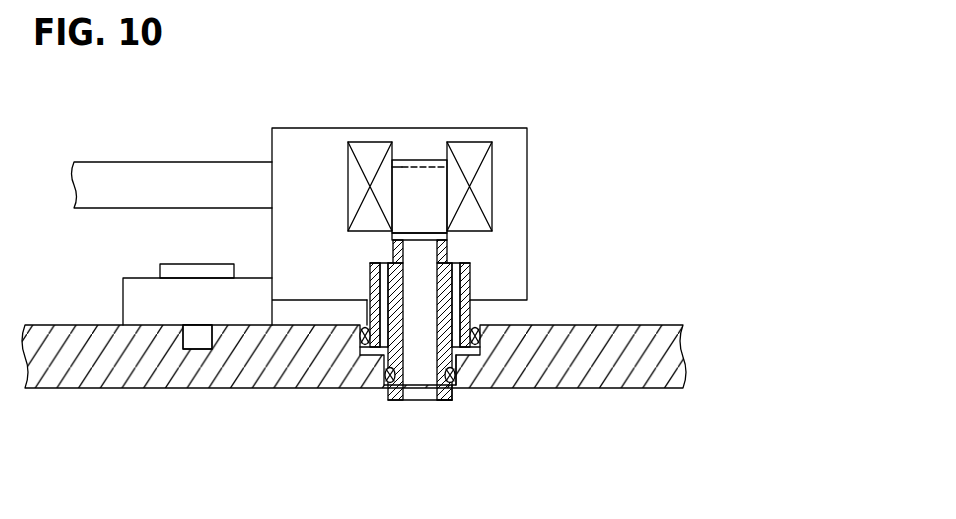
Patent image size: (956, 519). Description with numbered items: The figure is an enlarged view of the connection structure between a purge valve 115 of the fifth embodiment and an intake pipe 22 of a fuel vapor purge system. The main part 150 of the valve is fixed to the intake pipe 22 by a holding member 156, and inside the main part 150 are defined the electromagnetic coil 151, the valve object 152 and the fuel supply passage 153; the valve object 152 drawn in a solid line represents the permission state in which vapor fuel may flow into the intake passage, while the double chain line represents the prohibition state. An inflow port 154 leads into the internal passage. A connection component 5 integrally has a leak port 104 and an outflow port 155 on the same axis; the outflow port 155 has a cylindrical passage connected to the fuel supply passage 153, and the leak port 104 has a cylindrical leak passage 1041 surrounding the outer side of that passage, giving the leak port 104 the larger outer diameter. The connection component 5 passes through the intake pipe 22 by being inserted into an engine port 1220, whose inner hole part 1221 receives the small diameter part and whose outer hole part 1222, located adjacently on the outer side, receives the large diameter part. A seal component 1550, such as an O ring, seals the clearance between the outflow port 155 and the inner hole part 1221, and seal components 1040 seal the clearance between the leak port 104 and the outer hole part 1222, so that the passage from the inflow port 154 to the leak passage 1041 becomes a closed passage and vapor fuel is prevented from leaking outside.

The connection component 5 is at (480, 280).
The intake pipe 22 is at (63, 325).
The leak port 104 is at (470, 318).
The seal component 1040 is at (360, 343).
The leak passage 1041 is at (452, 308).
The purge valve 115 is at (536, 124).
The main part 150 is at (314, 128).
The electromagnetic coil 151 is at (470, 142).
The valve object 152 is at (378, 125).
The fuel supply passage 153 is at (447, 242).
The inflow port 154 is at (193, 162).
The outflow port 155 is at (392, 402).
The seal component 1550 is at (388, 368).
The holding member 156 is at (196, 264).
The engine port 1220 is at (463, 395).
The inner hole part 1221 is at (453, 400).
The outer hole part 1222 is at (455, 378).